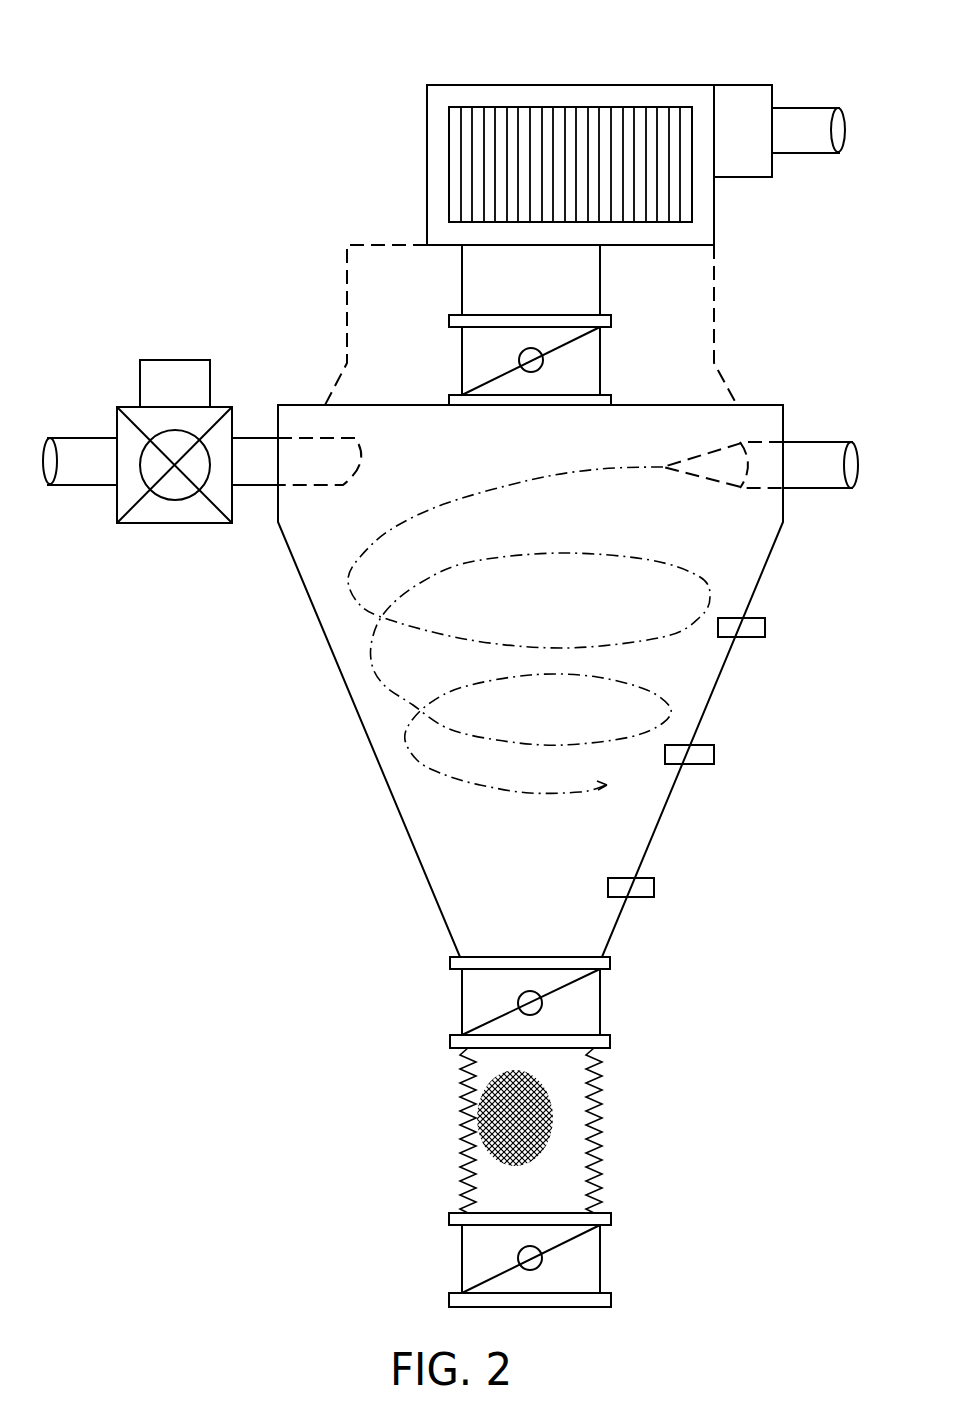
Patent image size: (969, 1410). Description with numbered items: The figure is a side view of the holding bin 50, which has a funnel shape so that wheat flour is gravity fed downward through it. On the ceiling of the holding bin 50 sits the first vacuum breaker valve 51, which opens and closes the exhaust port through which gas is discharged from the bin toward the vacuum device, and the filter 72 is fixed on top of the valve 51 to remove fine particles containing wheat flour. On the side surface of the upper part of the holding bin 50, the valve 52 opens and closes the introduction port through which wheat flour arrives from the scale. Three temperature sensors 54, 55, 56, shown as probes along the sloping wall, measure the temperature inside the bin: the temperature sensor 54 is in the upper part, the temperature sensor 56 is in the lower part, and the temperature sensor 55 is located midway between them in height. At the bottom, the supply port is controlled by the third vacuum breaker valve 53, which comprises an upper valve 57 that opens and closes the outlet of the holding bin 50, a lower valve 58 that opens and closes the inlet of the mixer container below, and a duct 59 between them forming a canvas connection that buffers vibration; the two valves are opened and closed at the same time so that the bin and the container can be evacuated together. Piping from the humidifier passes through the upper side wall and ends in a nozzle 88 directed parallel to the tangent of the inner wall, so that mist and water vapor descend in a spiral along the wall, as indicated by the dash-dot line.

The holding bin 50 is at (703, 678).
The first vacuum breaker valve 51 is at (472, 360).
The valve 52 is at (130, 400).
The third vacuum breaker valve 53 is at (405, 1113).
The temperature sensor 54 is at (748, 628).
The temperature sensor 55 is at (700, 760).
The temperature sensor 56 is at (637, 892).
The upper valve 57 is at (472, 1007).
The lower valve 58 is at (592, 1262).
The duct 59 is at (600, 1122).
The filter 72 is at (590, 97).
The nozzle 88 is at (712, 478).